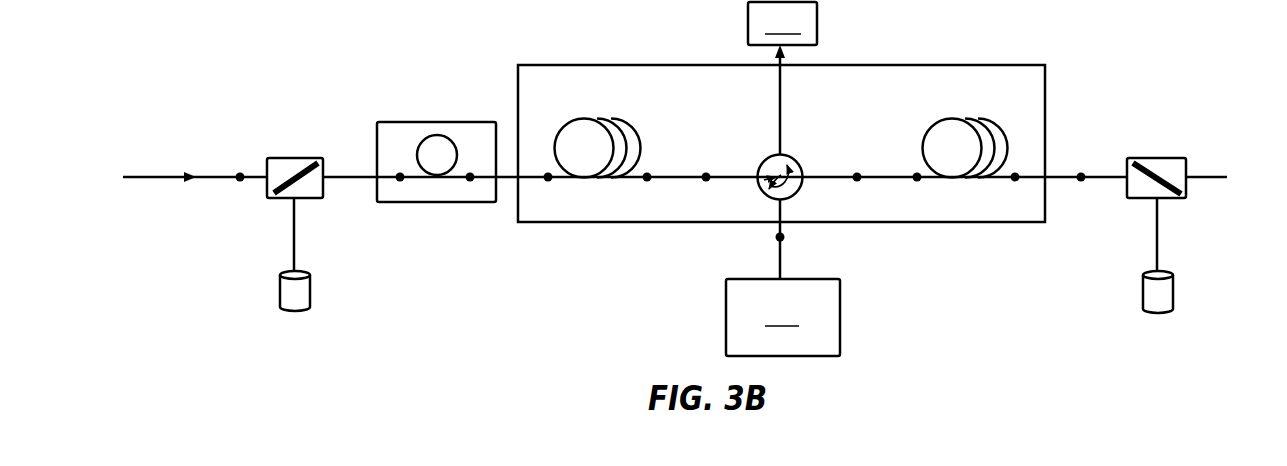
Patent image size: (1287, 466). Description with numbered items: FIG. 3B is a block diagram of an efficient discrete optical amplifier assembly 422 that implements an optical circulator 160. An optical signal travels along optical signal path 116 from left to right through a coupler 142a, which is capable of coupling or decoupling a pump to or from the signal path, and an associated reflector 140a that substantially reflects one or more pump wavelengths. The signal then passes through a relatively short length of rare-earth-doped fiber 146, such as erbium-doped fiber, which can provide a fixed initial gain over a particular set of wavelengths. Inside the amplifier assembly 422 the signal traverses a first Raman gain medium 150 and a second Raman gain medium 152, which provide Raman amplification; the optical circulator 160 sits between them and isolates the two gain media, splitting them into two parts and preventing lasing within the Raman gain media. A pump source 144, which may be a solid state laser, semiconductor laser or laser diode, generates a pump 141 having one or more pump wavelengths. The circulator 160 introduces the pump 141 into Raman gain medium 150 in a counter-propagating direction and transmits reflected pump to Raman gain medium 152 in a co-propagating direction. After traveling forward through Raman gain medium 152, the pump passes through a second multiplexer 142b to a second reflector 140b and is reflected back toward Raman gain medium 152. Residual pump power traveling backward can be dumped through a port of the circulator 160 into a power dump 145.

The optical signal path 116 is at (675, 166).
The coupler 142a is at (294, 158).
The reflector 140a is at (280, 290).
The rare-earth-doped fiber 146 is at (437, 122).
The efficient discrete optical amplifier assembly 422 is at (1188, 92).
The first Raman gain medium 150 is at (598, 118).
The second Raman gain medium 152 is at (952, 118).
The optical circulator 160 is at (764, 161).
The power dump 145 is at (782, 78).
The pump 141 is at (779, 265).
The pump source 144 is at (783, 317).
The second multiplexer 142b is at (1157, 158).
The second reflector 140b is at (1143, 290).